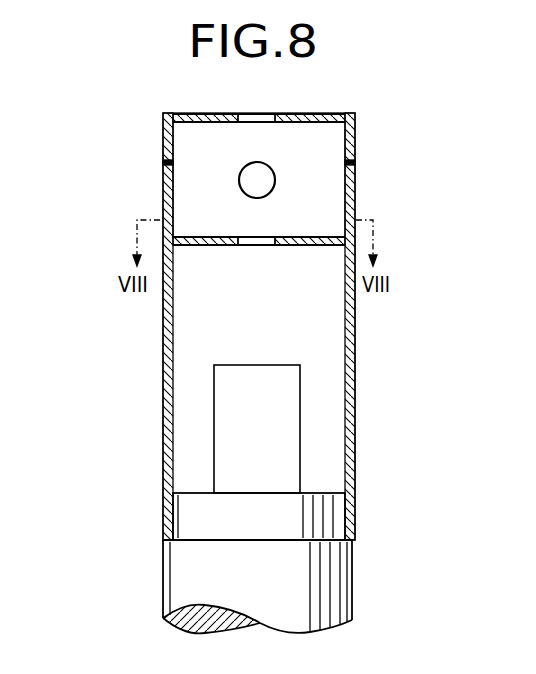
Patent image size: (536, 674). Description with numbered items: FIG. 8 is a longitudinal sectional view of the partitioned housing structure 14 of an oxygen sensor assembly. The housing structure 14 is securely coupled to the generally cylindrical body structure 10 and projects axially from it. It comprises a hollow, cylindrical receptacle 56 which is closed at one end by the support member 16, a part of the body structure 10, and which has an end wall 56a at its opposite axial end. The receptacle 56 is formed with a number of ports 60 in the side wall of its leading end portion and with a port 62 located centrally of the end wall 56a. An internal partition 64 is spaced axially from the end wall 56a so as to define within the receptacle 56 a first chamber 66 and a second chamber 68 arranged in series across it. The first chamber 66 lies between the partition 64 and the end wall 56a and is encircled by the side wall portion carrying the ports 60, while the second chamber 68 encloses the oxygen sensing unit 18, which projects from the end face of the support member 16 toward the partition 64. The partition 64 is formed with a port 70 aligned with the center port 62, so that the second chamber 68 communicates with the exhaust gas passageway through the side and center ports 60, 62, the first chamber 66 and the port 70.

The body structure 10 is at (163, 572).
The partitioned housing structure 14 is at (362, 133).
The support member 16 is at (315, 492).
The oxygen sensing unit 18 is at (250, 365).
The receptacle 56 is at (355, 353).
The end wall 56a is at (190, 113).
The ports 60 is at (166, 162).
The port 62 is at (268, 123).
The internal partition 64 is at (312, 246).
The first chamber 66 is at (317, 195).
The second chamber 68 is at (185, 384).
The port 70 is at (258, 246).